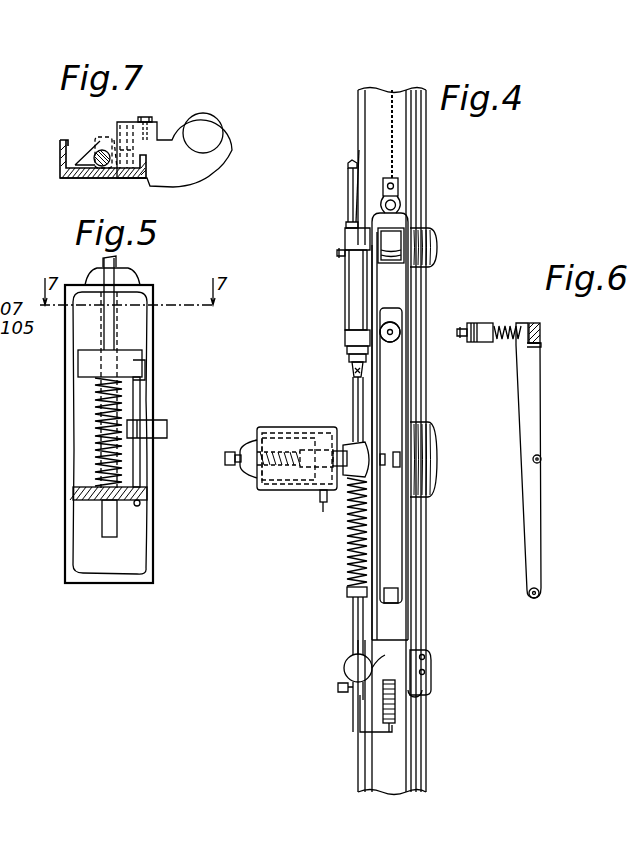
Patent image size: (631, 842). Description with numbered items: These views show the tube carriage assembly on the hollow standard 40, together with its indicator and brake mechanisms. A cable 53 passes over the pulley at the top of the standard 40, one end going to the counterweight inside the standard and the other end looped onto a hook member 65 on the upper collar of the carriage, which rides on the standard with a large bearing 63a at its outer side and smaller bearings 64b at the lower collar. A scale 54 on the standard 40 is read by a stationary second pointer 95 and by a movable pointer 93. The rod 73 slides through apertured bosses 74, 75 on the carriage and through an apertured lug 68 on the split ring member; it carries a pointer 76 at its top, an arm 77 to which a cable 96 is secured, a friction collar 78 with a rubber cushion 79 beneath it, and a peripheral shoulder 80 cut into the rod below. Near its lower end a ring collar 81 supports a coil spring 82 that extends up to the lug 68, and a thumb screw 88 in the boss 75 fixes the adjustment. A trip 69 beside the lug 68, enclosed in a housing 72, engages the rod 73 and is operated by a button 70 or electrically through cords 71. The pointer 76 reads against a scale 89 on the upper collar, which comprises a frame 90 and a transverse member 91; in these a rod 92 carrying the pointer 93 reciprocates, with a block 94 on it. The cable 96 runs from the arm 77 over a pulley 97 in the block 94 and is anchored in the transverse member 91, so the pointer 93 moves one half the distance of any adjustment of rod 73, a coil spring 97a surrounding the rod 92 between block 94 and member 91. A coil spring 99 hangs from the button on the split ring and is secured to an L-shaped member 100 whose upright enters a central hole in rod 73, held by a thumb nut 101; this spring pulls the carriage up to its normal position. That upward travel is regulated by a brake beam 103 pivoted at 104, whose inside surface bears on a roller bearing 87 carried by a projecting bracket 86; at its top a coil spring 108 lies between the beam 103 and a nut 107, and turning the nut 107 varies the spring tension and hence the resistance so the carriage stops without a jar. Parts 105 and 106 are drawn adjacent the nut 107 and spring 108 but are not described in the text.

In FIG. 4, the standard 40 is at (416, 772).
In FIG. 4, the cable 53 is at (398, 103).
In FIG. 4, the scale 54 is at (358, 101).
In FIG. 4, the large bearing 63a is at (393, 245).
In FIG. 4, the smaller bearings 64b is at (423, 694).
In FIG. 4, the hook member 65 is at (398, 212).
In FIG. 4, the apertured lug 68 is at (352, 445).
In FIG. 4, the release or trip 69 is at (327, 460).
In FIG. 4, the button 70 is at (235, 455).
In FIG. 4, the cords 71 is at (323, 512).
In FIG. 4, the housing 72 is at (262, 430).
In FIG. 7, the rod 73 is at (212, 132).
In FIG. 4, the rod 73 is at (355, 281).
In FIG. 4, the apertured boss 74 is at (350, 338).
In FIG. 4, the apertured boss 75 is at (370, 678).
In FIG. 4, the pointer 76 is at (337, 253).
In FIG. 7, the arm 77 is at (150, 120).
In FIG. 5, the arm 77 is at (167, 427).
In FIG. 4, the collar 78 is at (350, 350).
In FIG. 4, the rubber cushion 79 is at (350, 359).
In FIG. 4, the peripheral shoulder 80 is at (352, 371).
In FIG. 4, the ring collar 81 is at (347, 594).
In FIG. 4, the coil spring 82 is at (347, 556).
In FIG. 4, the projecting bracket 86 is at (403, 459).
In FIG. 4, the roller bearing 87 is at (397, 451).
In FIG. 6, the roller bearing 87 is at (540, 457).
In FIG. 4, the thumb screw 88 is at (352, 668).
In FIG. 7, the scale 89 is at (83, 178).
In FIG. 4, the scale 89 is at (345, 241).
In FIG. 7, the frame 90 is at (60, 158).
In FIG. 5, the frame 90 is at (152, 287).
In FIG. 4, the frame 90 is at (345, 301).
In FIG. 5, the transverse member 91 is at (138, 504).
In FIG. 7, the rod 92 is at (100, 152).
In FIG. 5, the rod 92 is at (115, 320).
In FIG. 4, the rod 92 is at (347, 176).
In FIG. 4, the pointer 93 is at (350, 162).
In FIG. 7, the block 94 is at (64, 147).
In FIG. 5, the block 94 is at (125, 355).
In FIG. 4, the second pointer 95 is at (355, 216).
In FIG. 7, the cable 96 is at (128, 134).
In FIG. 5, the cable 96 is at (141, 392).
In FIG. 7, the pulley 97 is at (118, 137).
In FIG. 5, the pulley 97 is at (146, 366).
In FIG. 7, the coil spring 97a is at (100, 137).
In FIG. 5, the coil spring 97a is at (95, 448).
In FIG. 4, the coil spring 99 is at (396, 702).
In FIG. 4, the L-shaped member 100 is at (357, 733).
In FIG. 4, the thumb nut 101 is at (338, 688).
In FIG. 4, the brake beam 103 is at (395, 525).
In FIG. 6, the brake beam 103 is at (527, 415).
In FIG. 4, the pivot 104 is at (398, 597).
In FIG. 6, the pivot 104 is at (540, 594).
In FIG. 4, the pivot / block 105 is at (395, 336).
In FIG. 6, the pivot / block 105 is at (541, 325).
In FIG. 6, the pin 106 is at (543, 343).
In FIG. 4, the nut 107 is at (393, 328).
In FIG. 6, the nut 107 is at (483, 323).
In FIG. 6, the coil spring 108 is at (508, 327).